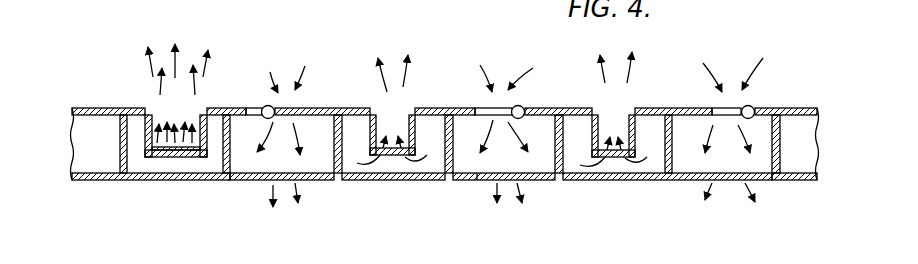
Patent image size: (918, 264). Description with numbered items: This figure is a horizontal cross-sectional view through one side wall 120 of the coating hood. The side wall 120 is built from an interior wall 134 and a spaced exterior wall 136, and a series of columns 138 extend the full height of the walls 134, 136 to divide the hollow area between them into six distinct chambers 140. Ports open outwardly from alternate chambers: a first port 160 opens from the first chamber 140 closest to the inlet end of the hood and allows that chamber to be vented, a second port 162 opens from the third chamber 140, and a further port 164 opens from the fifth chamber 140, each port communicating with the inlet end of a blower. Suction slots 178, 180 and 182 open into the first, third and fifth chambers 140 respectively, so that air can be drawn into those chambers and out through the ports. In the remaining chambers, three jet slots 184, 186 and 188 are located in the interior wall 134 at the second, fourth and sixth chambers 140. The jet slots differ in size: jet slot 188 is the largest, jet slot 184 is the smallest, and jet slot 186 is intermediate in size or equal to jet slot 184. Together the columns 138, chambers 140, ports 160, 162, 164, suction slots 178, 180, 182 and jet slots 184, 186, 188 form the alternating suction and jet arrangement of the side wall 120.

The side wall 120 is at (92, 175).
The interior wall 134 is at (447, 108).
The exterior wall 136 is at (382, 178).
The columns 138 is at (226, 168).
The chambers 140 is at (297, 159).
The first port 160 is at (730, 180).
The second port 162 is at (482, 178).
The bottom sheet opening region 164 is at (258, 178).
The suction slot 178 is at (748, 108).
The suction slot 180 is at (513, 110).
The suction slot 182 is at (272, 108).
The jet slot 184 is at (627, 120).
The jet slot 186 is at (403, 120).
The jet slot 188 is at (185, 144).